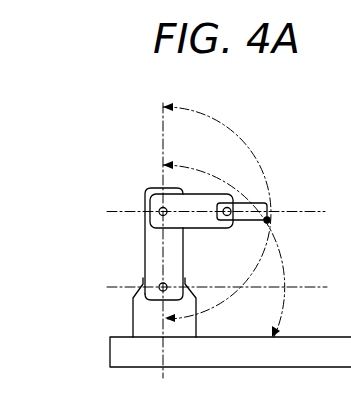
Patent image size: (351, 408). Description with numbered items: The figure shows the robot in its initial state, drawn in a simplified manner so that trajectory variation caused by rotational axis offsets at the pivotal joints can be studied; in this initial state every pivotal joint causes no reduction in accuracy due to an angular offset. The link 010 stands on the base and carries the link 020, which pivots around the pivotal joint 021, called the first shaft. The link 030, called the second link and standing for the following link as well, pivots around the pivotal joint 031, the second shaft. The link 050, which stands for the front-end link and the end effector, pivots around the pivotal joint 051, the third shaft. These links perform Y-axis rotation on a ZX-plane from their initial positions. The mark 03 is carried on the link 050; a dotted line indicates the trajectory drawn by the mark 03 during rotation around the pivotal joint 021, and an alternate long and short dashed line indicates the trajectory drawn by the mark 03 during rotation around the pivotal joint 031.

The link 010 is at (143, 322).
The link 020 is at (150, 250).
The pivotal joint 021 is at (159, 290).
The link 030 is at (195, 199).
The pivotal joint 031 is at (158, 208).
The link 050 is at (247, 208).
The pivotal joint 051 is at (227, 207).
The mark 03 is at (268, 221).